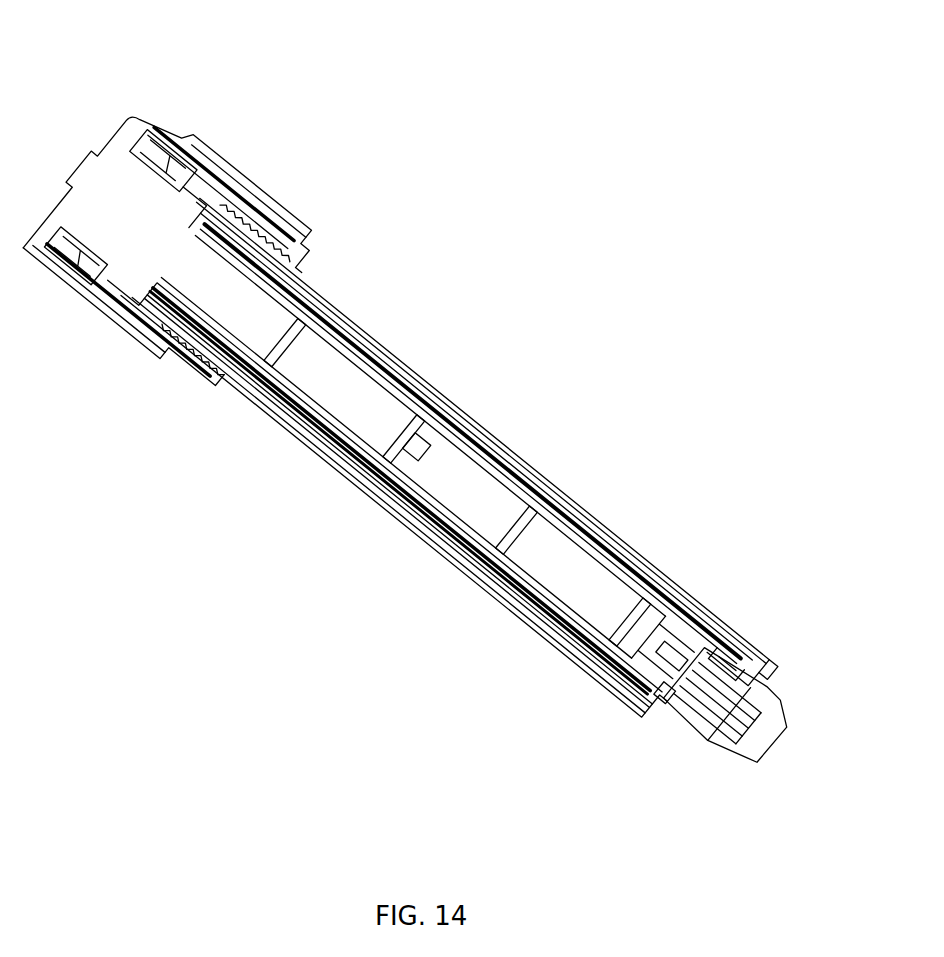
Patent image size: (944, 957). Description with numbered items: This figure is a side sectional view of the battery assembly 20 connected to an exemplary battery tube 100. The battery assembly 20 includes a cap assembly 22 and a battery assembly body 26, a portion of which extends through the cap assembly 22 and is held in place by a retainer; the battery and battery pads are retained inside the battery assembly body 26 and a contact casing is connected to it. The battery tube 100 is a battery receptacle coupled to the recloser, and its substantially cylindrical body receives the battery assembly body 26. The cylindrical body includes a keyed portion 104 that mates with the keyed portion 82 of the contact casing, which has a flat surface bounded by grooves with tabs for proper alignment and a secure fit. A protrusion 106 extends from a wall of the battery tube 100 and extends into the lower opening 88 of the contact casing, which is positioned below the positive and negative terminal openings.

The battery assembly 20 is at (112, 92).
The cap assembly 22 is at (214, 150).
The battery assembly body 26 is at (333, 311).
The battery tube 100 is at (322, 452).
The lower opening 88 is at (722, 658).
The protrusion 106 is at (770, 674).
The keyed portion 82 is at (668, 688).
The keyed portion 104 is at (690, 735).